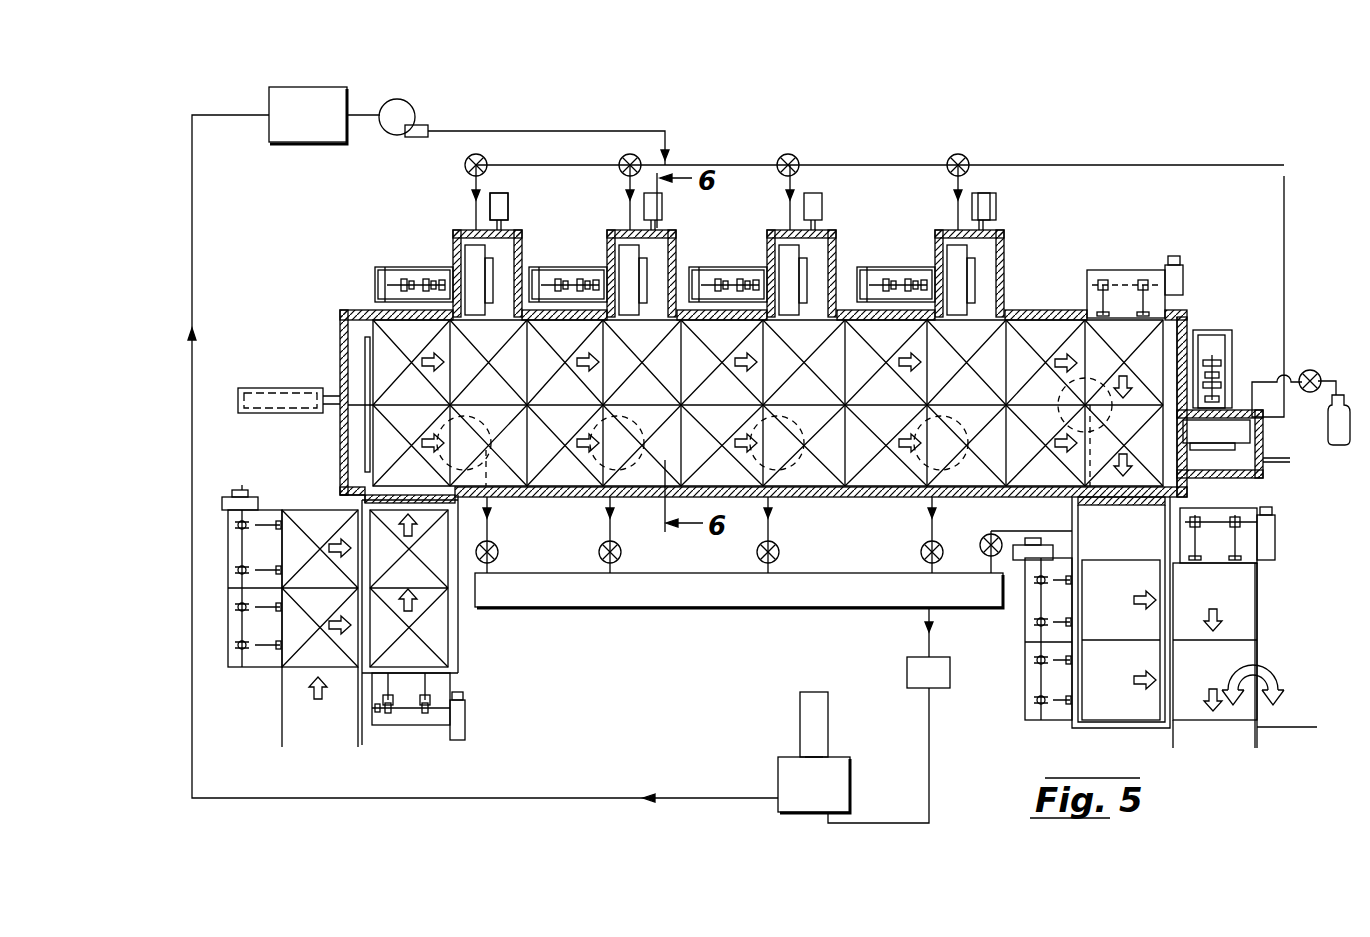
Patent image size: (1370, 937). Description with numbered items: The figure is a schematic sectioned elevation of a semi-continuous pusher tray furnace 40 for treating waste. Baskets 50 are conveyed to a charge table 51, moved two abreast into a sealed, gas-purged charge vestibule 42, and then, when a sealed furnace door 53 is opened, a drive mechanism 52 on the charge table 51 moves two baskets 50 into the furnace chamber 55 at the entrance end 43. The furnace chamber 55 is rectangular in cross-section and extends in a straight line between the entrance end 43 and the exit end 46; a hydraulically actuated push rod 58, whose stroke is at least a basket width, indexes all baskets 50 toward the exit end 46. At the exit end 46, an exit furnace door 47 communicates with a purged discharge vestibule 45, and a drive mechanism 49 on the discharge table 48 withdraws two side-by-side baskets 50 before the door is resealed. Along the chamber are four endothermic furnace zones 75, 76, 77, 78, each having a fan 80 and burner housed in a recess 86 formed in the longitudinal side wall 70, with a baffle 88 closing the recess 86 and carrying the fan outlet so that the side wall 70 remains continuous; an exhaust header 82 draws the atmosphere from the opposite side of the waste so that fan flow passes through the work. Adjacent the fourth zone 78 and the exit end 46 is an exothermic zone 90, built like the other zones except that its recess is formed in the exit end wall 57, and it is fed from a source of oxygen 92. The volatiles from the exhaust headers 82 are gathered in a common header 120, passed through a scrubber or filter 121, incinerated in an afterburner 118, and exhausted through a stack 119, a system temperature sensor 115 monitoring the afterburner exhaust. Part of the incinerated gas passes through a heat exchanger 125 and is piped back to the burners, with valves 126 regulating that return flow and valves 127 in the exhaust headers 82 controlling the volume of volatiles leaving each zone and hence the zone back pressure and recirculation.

The pusher tray furnace 40 is at (604, 620).
The charge vestibule 42 is at (460, 652).
The entrance end 43 is at (340, 455).
The discharge vestibule 45 is at (1103, 730).
The exit end 46 is at (1190, 345).
The exit furnace door 47 is at (1127, 506).
The discharge table 48 is at (1260, 592).
The drive mechanism 49 is at (1105, 266).
The basket 50 is at (432, 627).
The charge table 51 is at (268, 505).
The drive mechanism 52 is at (430, 728).
The furnace door 53 is at (362, 499).
The furnace chamber 55 is at (345, 322).
The exit end wall 57 is at (1207, 345).
The push rod 58 is at (365, 364).
The longitudinal side wall 70 is at (1018, 312).
The first furnace zone 75 is at (440, 243).
The second furnace zone 76 is at (598, 243).
The third furnace zone 77 is at (756, 243).
The fourth furnace zone 78 is at (928, 243).
The fan 80 is at (510, 200).
The exhaust header 82 is at (492, 497).
The recess 86 is at (1000, 225).
The baffle 88 is at (652, 497).
The exothermic zone 90 is at (1265, 472).
The source of oxygen 92 is at (1337, 394).
The system temperature sensor 115 is at (796, 752).
The afterburner 118 is at (785, 812).
The stack 119 is at (800, 706).
The common header 120 is at (690, 608).
The scrubber or filter 121 is at (952, 688).
The heat exchanger 125 is at (312, 143).
The valve 126 is at (793, 154).
The valve 127 is at (780, 552).